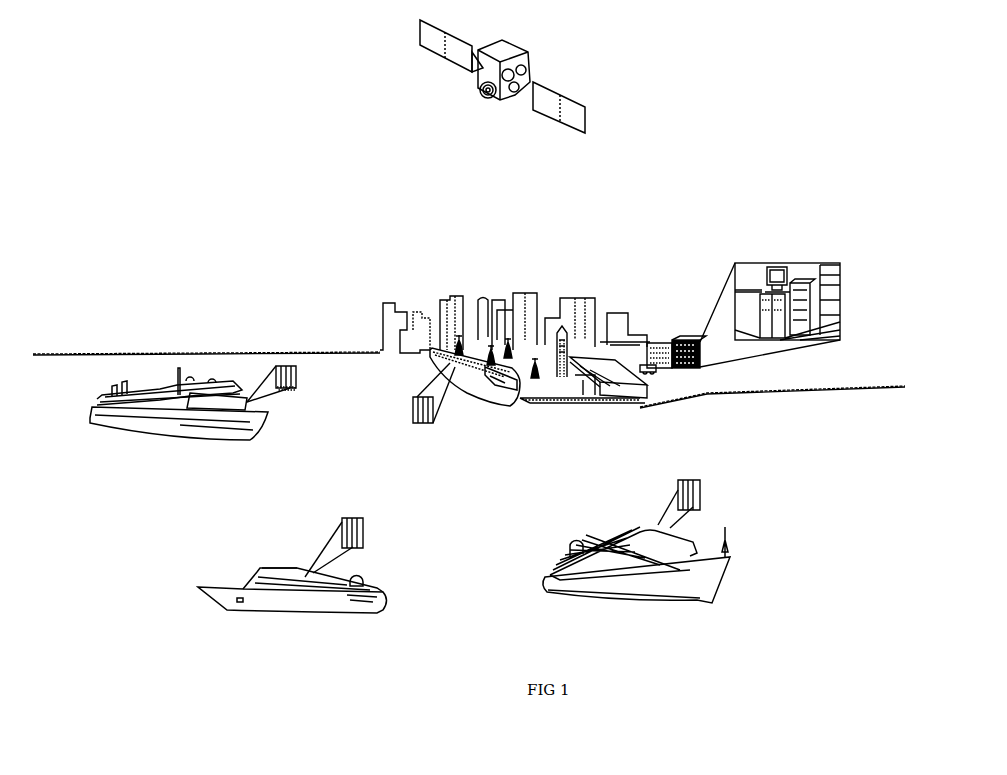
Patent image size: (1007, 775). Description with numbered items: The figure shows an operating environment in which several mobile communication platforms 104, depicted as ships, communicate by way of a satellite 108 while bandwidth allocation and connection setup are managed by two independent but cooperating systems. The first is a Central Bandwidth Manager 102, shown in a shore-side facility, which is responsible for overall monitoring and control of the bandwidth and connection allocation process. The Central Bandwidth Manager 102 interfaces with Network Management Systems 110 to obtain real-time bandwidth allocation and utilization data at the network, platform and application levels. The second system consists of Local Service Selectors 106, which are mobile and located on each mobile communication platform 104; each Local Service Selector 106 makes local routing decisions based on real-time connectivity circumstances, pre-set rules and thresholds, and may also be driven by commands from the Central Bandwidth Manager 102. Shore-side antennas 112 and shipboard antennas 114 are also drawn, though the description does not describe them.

The Central Bandwidth Manager 102 is at (835, 292).
The mobile communication platform 104 is at (253, 440).
The Local Service Selector 106 is at (293, 393).
The satellite 108 is at (490, 100).
The Network Management System 110 is at (742, 305).
The shore antenna / base station 112 is at (508, 340).
The vessel antenna 114 is at (489, 343).